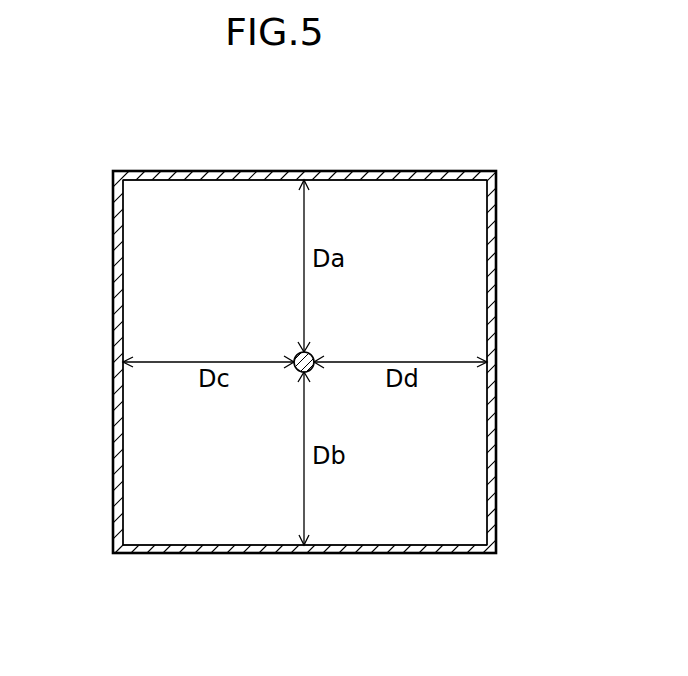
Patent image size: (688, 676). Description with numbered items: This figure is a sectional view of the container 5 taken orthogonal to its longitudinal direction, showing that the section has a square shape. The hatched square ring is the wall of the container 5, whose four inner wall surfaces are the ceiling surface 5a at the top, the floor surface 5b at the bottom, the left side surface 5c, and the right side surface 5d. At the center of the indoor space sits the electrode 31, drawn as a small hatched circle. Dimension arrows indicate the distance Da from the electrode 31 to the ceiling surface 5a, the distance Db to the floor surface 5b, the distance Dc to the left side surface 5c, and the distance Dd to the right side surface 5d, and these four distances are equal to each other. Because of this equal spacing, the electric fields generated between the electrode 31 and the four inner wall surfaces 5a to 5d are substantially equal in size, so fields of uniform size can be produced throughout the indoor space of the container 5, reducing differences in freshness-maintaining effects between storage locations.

The container 5 is at (458, 171).
The ceiling surface 5a is at (198, 180).
The floor surface 5b is at (398, 546).
The left side surface 5c is at (123, 242).
The right side surface 5d is at (487, 242).
The electrode 31 is at (312, 354).